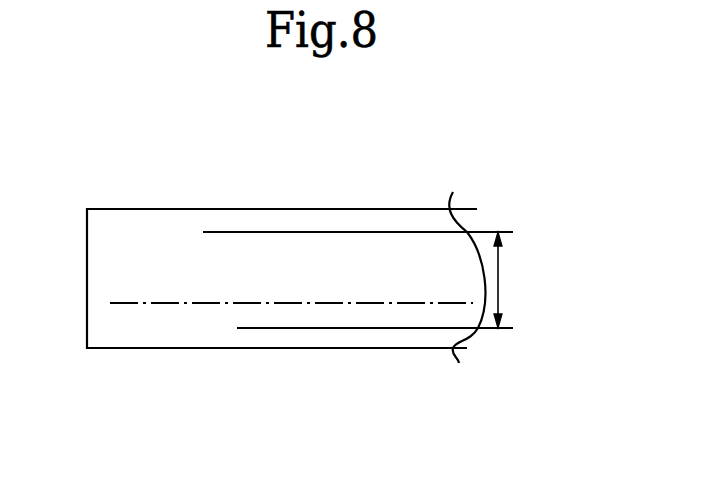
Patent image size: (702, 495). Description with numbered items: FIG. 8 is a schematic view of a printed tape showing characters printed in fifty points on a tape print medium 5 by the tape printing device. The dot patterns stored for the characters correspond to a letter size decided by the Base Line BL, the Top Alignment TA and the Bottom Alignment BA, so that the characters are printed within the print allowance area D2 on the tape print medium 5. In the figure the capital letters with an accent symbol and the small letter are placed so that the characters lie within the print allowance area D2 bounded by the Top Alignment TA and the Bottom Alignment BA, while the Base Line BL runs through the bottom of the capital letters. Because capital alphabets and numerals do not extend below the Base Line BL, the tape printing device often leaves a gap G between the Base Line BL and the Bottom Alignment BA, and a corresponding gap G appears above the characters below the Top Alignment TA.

The tape print medium 5 is at (337, 209).
The gap G is at (275, 235).
The Top Alignment TA is at (440, 232).
The Bottom Alignment BA is at (456, 330).
The Base Line BL is at (132, 304).
The print allowance area D2 is at (500, 278).